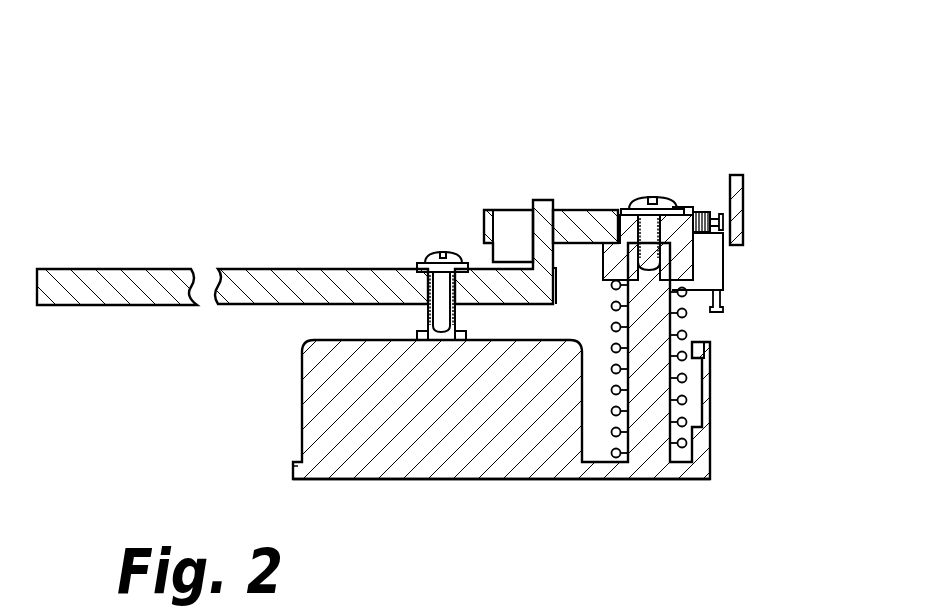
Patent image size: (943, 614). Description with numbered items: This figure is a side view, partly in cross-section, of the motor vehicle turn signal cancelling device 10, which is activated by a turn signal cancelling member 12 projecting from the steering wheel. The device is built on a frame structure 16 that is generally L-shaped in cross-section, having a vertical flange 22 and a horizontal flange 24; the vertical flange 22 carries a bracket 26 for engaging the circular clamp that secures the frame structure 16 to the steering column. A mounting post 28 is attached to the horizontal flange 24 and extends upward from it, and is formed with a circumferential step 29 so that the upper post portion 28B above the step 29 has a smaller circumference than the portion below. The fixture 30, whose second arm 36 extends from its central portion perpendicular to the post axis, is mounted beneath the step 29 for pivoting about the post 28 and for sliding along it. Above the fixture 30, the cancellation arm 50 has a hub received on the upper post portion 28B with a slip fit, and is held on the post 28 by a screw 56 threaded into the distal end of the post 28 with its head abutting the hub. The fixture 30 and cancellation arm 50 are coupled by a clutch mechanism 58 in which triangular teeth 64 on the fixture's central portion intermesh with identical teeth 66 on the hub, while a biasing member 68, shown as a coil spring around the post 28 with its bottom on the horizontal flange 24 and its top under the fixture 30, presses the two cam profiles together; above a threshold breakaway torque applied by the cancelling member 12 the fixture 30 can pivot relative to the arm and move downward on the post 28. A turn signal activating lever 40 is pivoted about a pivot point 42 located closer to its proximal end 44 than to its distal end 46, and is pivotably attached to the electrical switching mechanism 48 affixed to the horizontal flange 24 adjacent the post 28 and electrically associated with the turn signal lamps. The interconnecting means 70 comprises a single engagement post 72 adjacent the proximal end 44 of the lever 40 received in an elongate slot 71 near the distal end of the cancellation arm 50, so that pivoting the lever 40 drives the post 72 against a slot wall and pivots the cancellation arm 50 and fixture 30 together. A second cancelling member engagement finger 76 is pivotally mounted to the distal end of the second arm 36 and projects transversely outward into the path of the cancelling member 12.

The turn signal cancelling device 10 is at (612, 157).
The turn signal cancelling member 12 is at (745, 206).
The frame structure 16 is at (552, 488).
The vertical flange 22 is at (707, 350).
The horizontal flange 24 is at (513, 403).
The bracket 26 is at (571, 403).
The mounting post 28 is at (650, 324).
The upper post portion 28B is at (686, 210).
The circumferential step 29 is at (622, 207).
The fixture 30 is at (698, 264).
The second arm 36 is at (722, 284).
The turn signal activating lever 40 is at (114, 244).
The pivot point 42 is at (433, 326).
The proximal end 44 is at (366, 282).
The distal end 46 is at (53, 286).
The electrical switching mechanism 48 is at (513, 403).
The cancellation arm 50 is at (563, 198).
The screw 56 is at (654, 200).
The clutch mechanism 58 is at (748, 180).
The teeth of first cam profile 64 is at (607, 207).
The teeth of second cam profile 66 is at (690, 212).
The biasing member 68 is at (687, 379).
The interconnecting means 70 is at (463, 177).
The elongate slot 71 is at (517, 205).
The engagement post 72 is at (530, 262).
The second cancelling member engagement finger 76 is at (718, 251).